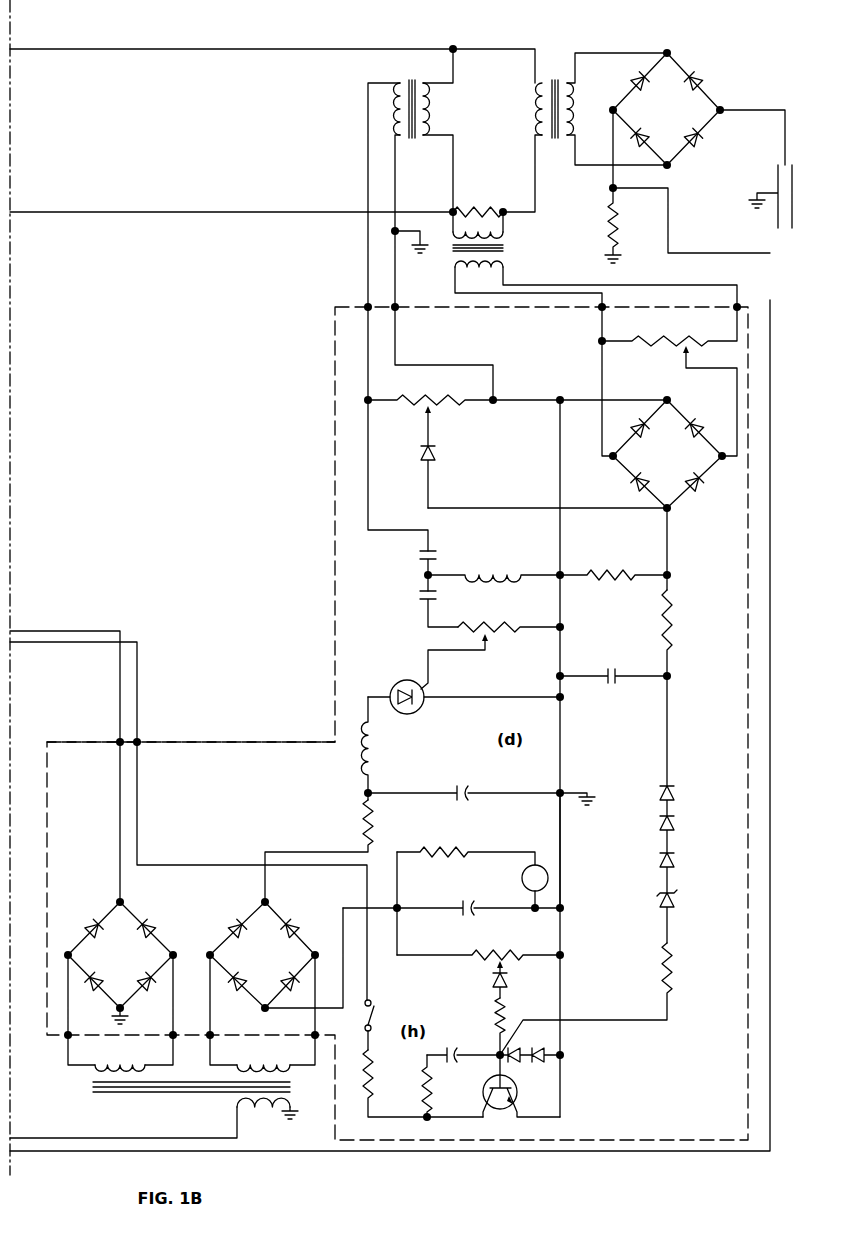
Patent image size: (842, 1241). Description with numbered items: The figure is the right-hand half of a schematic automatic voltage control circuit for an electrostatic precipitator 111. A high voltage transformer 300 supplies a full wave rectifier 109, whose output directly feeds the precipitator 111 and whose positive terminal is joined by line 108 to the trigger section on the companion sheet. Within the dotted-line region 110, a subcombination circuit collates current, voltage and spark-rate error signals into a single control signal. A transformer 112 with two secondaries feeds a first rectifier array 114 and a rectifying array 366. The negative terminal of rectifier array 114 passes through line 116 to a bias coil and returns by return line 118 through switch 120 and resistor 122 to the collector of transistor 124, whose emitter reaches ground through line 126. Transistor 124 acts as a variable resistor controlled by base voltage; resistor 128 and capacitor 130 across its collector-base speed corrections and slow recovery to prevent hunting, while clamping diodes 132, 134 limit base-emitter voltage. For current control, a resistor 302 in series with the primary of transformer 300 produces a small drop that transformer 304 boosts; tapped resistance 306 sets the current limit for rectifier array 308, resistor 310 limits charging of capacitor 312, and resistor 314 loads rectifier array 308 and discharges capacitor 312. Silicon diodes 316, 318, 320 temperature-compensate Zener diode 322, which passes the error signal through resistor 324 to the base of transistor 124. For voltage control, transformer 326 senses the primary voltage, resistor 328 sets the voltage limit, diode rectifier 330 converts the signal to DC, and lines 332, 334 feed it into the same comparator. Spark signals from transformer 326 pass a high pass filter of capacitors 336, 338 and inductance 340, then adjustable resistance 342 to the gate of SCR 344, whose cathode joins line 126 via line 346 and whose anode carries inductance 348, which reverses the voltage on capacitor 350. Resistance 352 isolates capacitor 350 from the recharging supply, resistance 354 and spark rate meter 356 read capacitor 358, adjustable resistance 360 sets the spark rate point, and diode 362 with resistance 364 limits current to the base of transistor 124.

The line 108 is at (709, 254).
The full wave rectifier 109 is at (710, 94).
The subcombination circuit 110 is at (266, 724).
The electrostatic precipitator 111 is at (777, 181).
The transformer 112 is at (185, 1097).
The first rectifier array 114 is at (157, 928).
The line 116 is at (75, 630).
The return line 118 is at (77, 651).
The switch 120 is at (372, 1008).
The resistor 122 is at (373, 1076).
The transistor 124 is at (484, 1104).
The line 126 is at (560, 856).
The resistor 128 is at (420, 1094).
The capacitor 130 is at (457, 1044).
The clamping diode 132 is at (523, 1050).
The clamping diode 134 is at (535, 1068).
The high voltage transformer 300 is at (555, 80).
The resistor 302 is at (478, 211).
The transformer 304 is at (508, 245).
The resistance 306 is at (656, 340).
The rectifier array 308 is at (703, 425).
The resistor 310 is at (672, 617).
The capacitor 312 is at (620, 668).
The resistor 314 is at (632, 573).
The silicon diode 316 is at (671, 786).
The silicon diode 318 is at (673, 828).
The silicon diode 320 is at (676, 862).
The Zener diode 322 is at (676, 904).
The resistor 324 is at (678, 956).
The transformer 326 is at (412, 138).
The resistor 328 is at (418, 400).
The diode rectifier 330 is at (434, 458).
The line 332 is at (516, 508).
The line 334 is at (543, 400).
The capacitor 336 is at (435, 551).
The capacitor 338 is at (436, 611).
The inductance 340 is at (486, 577).
The adjustable resistance 342 is at (484, 626).
The SCR 344 is at (405, 680).
The line 346 is at (519, 698).
The inductance 348 is at (369, 752).
The capacitor 350 is at (464, 787).
The resistance 352 is at (372, 834).
The resistance 354 is at (458, 851).
The spark rate meter 356 is at (522, 882).
The capacitor 358 is at (462, 905).
The adjustable resistance 360 is at (494, 954).
The diode 362 is at (508, 984).
The resistance 364 is at (494, 1013).
The rectifying array 366 is at (222, 928).